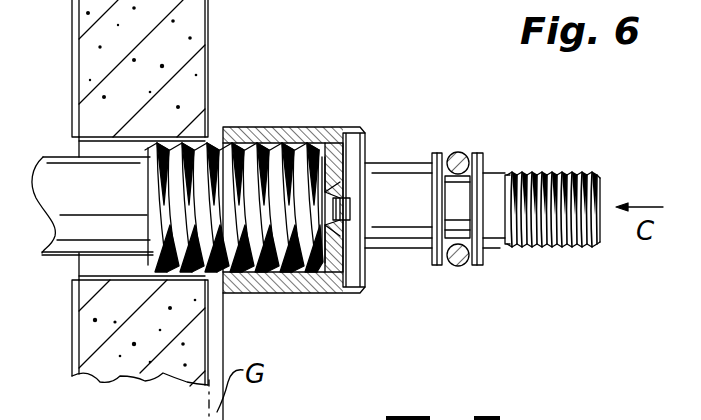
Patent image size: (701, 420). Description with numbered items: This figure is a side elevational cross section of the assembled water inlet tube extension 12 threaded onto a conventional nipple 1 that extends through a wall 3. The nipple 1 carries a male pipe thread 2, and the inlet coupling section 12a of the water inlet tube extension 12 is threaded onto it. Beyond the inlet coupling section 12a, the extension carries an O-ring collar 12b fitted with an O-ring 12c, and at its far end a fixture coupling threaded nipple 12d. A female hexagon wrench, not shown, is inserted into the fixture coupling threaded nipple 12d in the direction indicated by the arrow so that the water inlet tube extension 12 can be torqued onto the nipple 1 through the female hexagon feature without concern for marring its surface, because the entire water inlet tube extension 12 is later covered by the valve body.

The nipple 1 is at (62, 170).
The male pipe thread 2 is at (245, 203).
The wall 3 is at (210, 53).
The water inlet tube extension 12 is at (380, 110).
The inlet coupling section 12a is at (283, 127).
The O-ring collar 12b is at (465, 282).
The O-ring 12c is at (460, 151).
The fixture coupling threaded nipple 12d is at (558, 172).